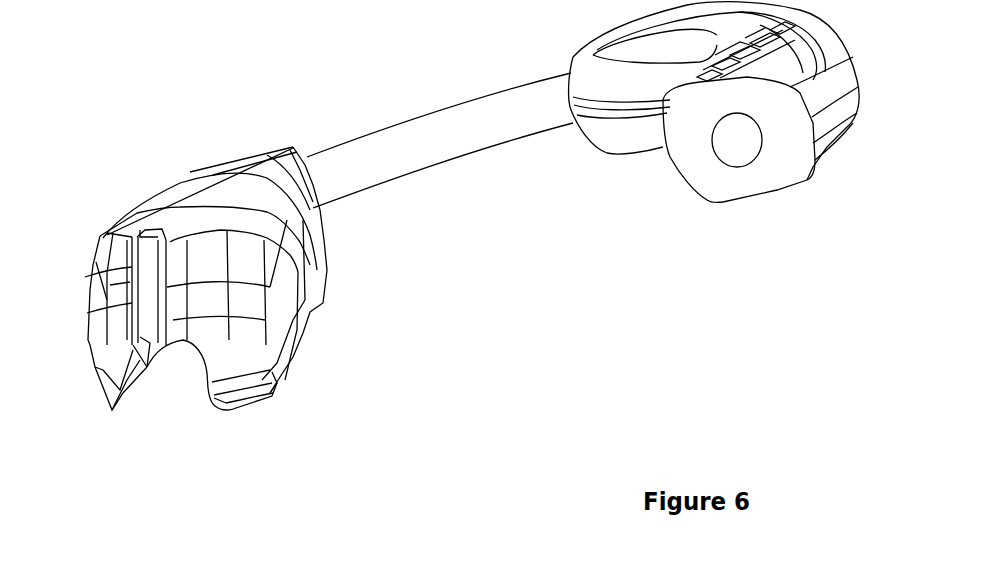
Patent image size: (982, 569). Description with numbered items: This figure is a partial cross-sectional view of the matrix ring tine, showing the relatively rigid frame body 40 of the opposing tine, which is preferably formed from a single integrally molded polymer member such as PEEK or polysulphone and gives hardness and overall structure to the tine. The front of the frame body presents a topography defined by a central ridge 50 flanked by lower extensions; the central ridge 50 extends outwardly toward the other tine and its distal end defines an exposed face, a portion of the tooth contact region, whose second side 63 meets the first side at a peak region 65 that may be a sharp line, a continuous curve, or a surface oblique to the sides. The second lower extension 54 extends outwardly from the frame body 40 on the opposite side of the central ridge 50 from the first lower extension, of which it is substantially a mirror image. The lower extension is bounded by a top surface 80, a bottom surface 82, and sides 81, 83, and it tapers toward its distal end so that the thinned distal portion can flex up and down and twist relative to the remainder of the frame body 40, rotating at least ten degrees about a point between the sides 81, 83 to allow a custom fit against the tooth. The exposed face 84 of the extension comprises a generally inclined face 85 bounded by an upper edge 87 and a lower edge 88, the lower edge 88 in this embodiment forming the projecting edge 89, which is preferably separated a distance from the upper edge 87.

The frame body 40 is at (327, 270).
The central ridge 50 is at (137, 320).
The second lower extension 54 is at (307, 355).
The second side 63 is at (160, 305).
The peak region 65 is at (137, 273).
The top surface 80 is at (290, 315).
The side 81 is at (267, 396).
The bottom surface 82 is at (280, 386).
The side 83 is at (200, 420).
The exposed face 84 is at (245, 415).
The inclined face 85 is at (245, 415).
The upper edge 87 is at (203, 398).
The lower edge 88 is at (219, 422).
The projecting edge 89 is at (219, 422).